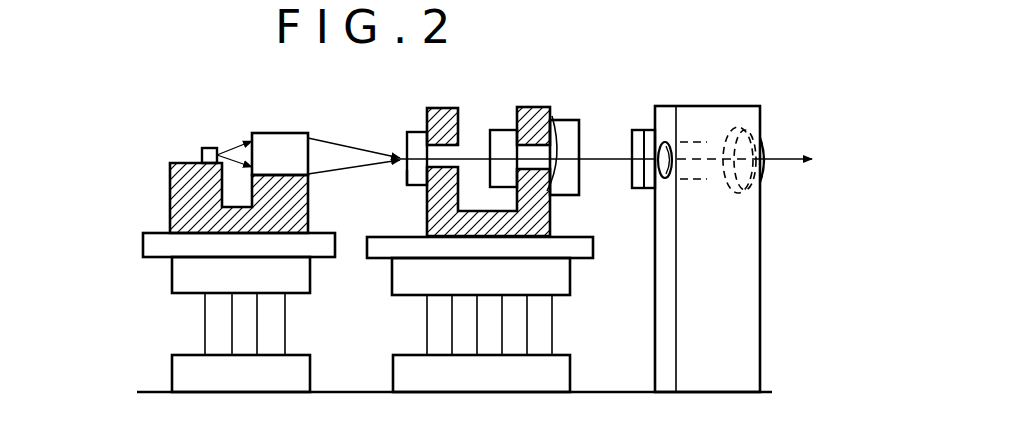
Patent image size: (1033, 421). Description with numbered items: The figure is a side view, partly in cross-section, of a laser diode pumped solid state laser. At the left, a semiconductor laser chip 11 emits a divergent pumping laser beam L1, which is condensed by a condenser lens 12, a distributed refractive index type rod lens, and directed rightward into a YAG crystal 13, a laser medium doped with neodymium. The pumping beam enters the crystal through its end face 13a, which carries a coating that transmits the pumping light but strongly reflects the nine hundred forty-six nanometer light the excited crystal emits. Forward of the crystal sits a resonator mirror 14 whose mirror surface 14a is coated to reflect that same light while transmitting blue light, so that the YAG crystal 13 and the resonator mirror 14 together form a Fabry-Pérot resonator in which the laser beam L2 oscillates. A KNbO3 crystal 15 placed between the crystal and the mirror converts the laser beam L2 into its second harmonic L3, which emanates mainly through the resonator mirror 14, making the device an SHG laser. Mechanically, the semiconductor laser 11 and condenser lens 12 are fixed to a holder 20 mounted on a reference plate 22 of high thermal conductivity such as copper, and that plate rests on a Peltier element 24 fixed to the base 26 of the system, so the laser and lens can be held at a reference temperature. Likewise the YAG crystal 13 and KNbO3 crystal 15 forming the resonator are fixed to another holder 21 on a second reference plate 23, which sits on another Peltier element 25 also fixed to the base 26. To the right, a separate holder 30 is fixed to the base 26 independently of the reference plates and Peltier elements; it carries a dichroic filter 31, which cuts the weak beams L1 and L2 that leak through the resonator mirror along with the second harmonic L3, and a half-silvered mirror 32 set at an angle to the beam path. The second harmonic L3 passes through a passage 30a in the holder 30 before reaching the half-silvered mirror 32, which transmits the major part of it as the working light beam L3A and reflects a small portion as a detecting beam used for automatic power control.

The semiconductor laser chip 11 is at (210, 147).
The condenser lens 12 is at (280, 140).
The YAG crystal 13 is at (413, 130).
The end face 13a is at (406, 175).
The resonator mirror 14 is at (569, 119).
The mirror surface 14a is at (548, 187).
The KNbO3 crystal 15 is at (497, 130).
The holder 20 is at (180, 162).
The holder 21 is at (445, 107).
The reference plate 22 is at (158, 240).
The reference plate 23 is at (596, 245).
The Peltier element 24 is at (218, 320).
The Peltier element 25 is at (544, 326).
The base 26 is at (155, 390).
The holder 30 is at (744, 105).
The passage 30a is at (668, 178).
The dichroic filter 31 is at (644, 130).
The half-silvered mirror 32 is at (725, 127).
The pumping laser beam L1 is at (352, 147).
The laser beam L2 is at (473, 160).
The second harmonic L3 is at (603, 157).
The working light beam L3A is at (784, 157).